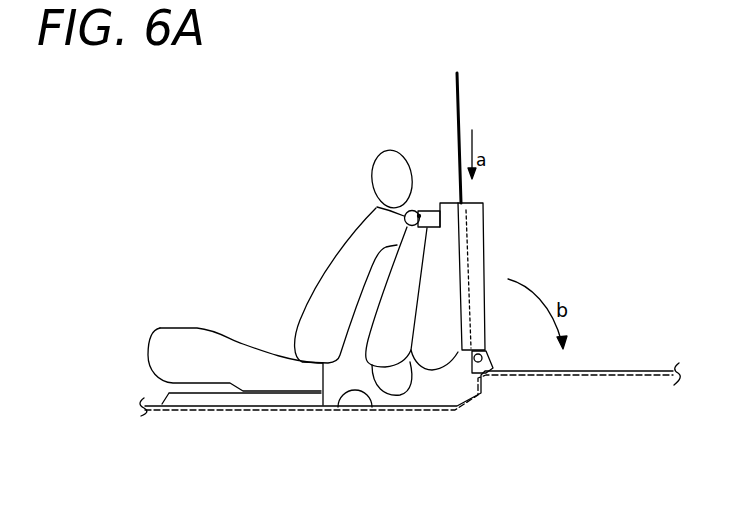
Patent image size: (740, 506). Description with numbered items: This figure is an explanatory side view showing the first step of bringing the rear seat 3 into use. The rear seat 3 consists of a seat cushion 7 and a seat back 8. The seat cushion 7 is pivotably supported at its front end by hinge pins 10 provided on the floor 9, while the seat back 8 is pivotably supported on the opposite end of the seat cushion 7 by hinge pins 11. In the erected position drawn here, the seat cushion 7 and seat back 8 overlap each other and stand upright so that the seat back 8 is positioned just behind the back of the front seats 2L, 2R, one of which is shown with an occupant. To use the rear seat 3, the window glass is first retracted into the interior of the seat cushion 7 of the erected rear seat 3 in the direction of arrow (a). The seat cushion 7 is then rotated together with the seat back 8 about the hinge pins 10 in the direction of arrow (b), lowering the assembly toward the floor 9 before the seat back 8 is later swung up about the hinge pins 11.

The front seat 2L is at (235, 312).
The front seat 2R is at (243, 328).
The rear seat 3 is at (428, 348).
The seat cushion 7 is at (448, 355).
The seat back 8 is at (392, 403).
The floor 9 is at (342, 403).
The hinge pin 10 is at (487, 348).
The hinge pin 11 is at (420, 211).